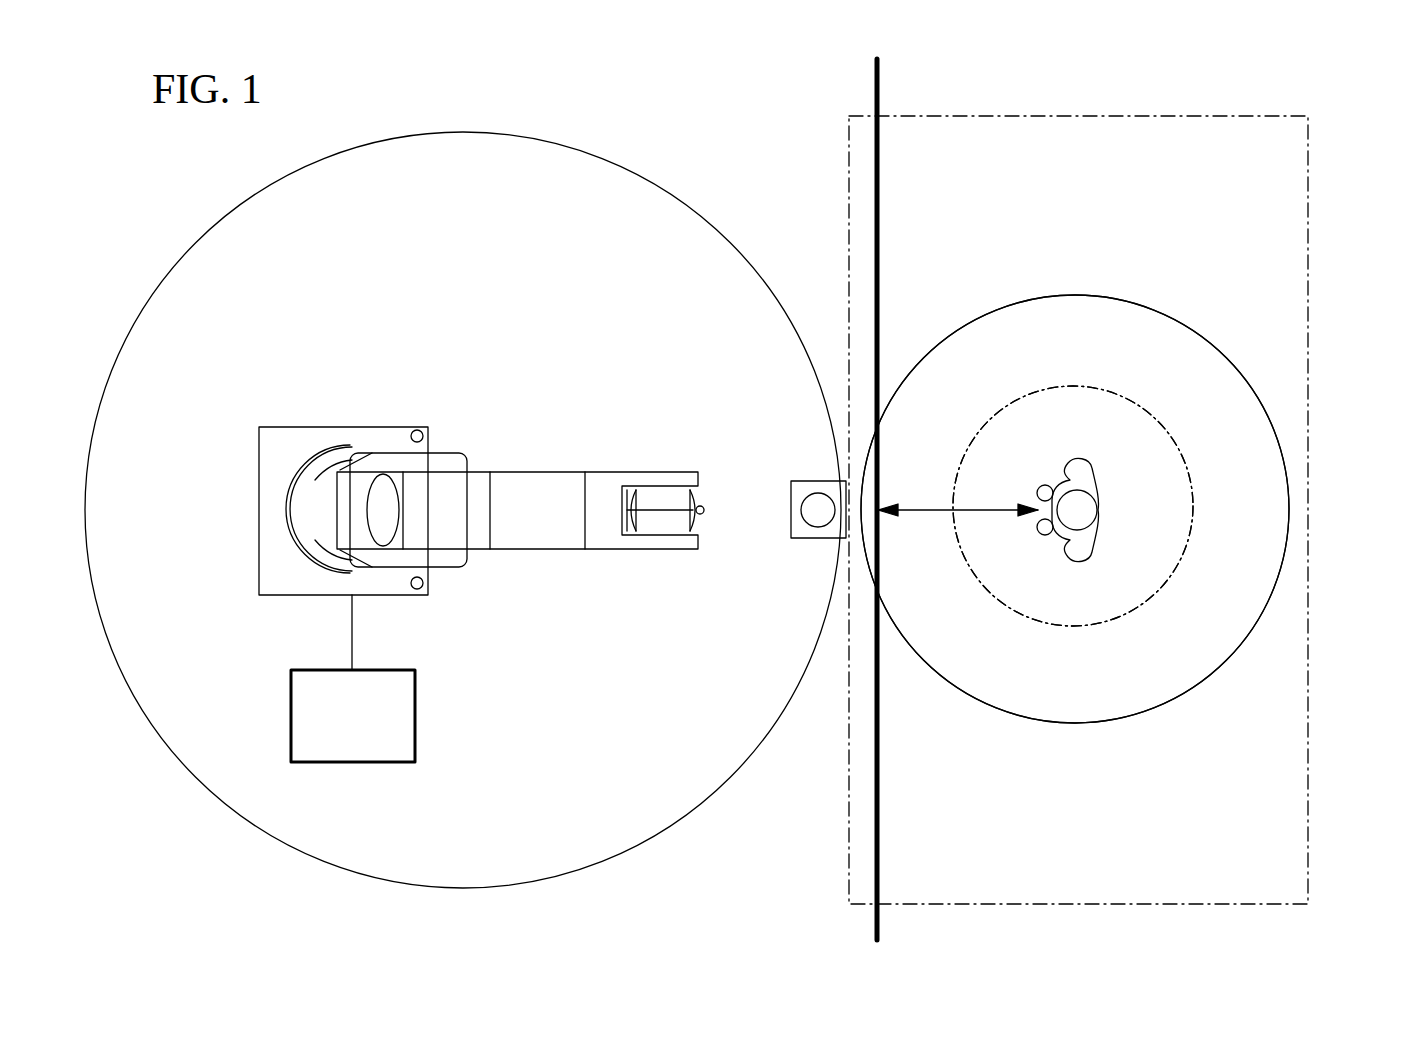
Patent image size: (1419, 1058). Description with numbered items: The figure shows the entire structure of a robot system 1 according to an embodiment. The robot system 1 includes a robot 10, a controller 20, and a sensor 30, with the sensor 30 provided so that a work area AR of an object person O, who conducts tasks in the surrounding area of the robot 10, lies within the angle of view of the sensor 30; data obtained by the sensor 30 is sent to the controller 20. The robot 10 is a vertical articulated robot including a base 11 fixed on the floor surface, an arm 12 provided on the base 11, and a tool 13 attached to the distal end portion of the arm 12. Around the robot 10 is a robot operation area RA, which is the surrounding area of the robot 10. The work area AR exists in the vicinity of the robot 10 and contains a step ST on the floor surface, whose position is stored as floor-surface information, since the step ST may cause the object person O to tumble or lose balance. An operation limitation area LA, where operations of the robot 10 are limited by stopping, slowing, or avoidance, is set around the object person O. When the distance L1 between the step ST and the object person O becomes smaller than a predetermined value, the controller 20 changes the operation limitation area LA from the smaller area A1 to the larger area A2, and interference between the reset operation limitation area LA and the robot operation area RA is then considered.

The robot system 1 is at (468, 280).
The robot 10 is at (521, 466).
The base 11 is at (344, 427).
The arm 12 is at (561, 471).
The tool 13 is at (702, 515).
The controller 20 is at (417, 712).
The sensor 30 is at (806, 480).
The robot operation area RA is at (648, 176).
The step ST is at (880, 83).
The work area AR is at (1308, 163).
The area A1 is at (1120, 625).
The area A2 is at (1140, 303).
The operation limitation area LA is at (1250, 383).
The distance L1 is at (958, 496).
The object person O is at (1098, 510).